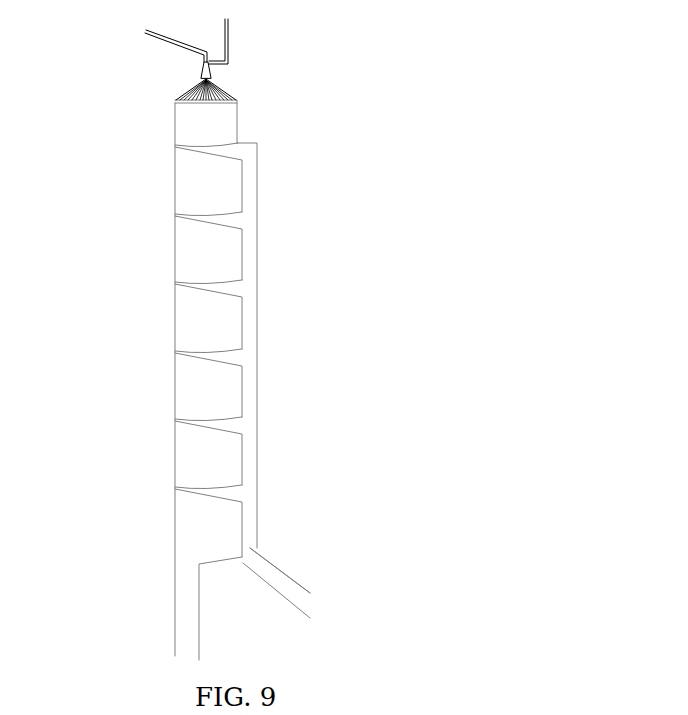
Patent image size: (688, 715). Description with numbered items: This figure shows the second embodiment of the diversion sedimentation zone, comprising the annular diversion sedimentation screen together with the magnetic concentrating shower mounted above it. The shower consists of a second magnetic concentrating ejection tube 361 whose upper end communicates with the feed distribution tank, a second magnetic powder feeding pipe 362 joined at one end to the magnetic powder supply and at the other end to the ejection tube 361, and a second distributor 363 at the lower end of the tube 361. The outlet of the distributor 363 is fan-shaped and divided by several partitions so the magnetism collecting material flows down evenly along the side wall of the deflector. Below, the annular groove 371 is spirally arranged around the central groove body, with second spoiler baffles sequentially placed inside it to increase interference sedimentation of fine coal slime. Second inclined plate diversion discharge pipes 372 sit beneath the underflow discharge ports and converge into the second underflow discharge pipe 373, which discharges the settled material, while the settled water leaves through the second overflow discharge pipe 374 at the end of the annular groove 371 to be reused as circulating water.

The second magnetic concentrating ejection tube 361 is at (197, 56).
The second magnetic powder feeding pipe 362 is at (230, 42).
The second distributor 363 is at (185, 95).
The annular groove 371 is at (214, 193).
The second inclined plate diversion discharge pipe 372 is at (237, 356).
The second underflow discharge pipe 373 is at (248, 548).
The second overflow discharge pipe 374 is at (190, 598).